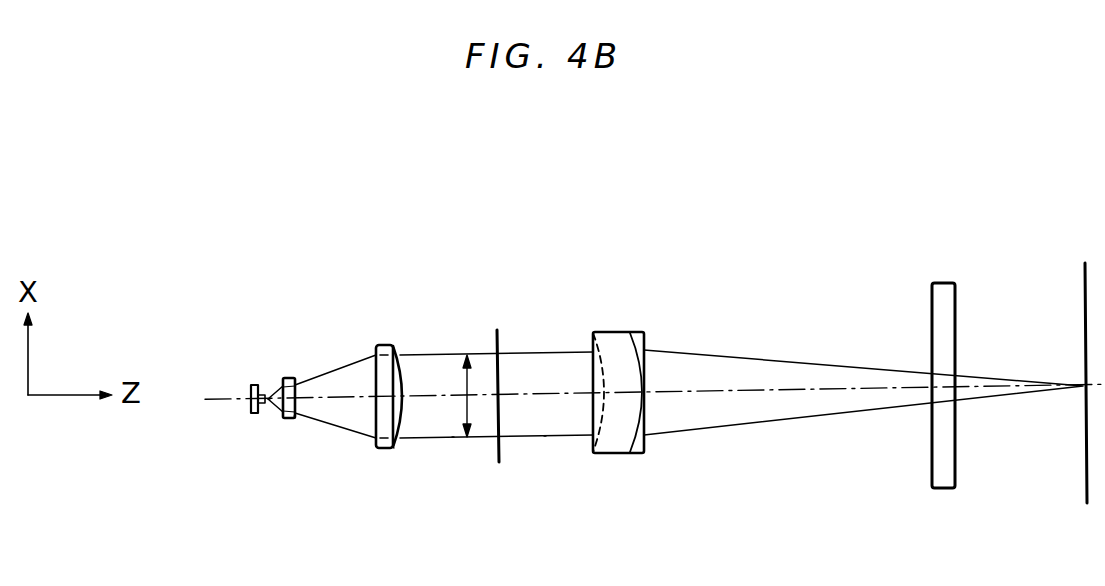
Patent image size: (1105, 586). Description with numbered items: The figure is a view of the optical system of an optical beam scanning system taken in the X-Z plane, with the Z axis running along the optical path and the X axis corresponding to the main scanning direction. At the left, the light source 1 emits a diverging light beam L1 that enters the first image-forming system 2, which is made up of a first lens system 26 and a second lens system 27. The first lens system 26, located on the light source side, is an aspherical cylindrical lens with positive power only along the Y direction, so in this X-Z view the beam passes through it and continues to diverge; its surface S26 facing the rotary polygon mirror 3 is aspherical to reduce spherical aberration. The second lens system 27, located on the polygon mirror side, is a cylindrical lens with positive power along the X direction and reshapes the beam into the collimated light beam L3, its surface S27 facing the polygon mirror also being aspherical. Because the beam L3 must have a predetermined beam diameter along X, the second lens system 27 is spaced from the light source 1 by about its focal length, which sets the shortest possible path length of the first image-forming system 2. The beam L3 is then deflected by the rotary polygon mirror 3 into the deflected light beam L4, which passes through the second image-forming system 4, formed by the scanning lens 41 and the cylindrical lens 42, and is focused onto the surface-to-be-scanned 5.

The light source 1 is at (267, 396).
The first image-forming system 2 is at (390, 263).
The first lens system 26 is at (288, 377).
The second lens system 27 is at (380, 344).
The rotary polygon mirror 3 is at (497, 330).
The second image-forming system 4 is at (948, 223).
The scanning lens 41 is at (620, 332).
The cylindrical lens 42 is at (943, 283).
The surface-to-be-scanned 5 is at (1085, 273).
The diverging light beam L1 is at (274, 404).
The surface of first lens system S26 is at (299, 419).
The surface of second lens system S27 is at (394, 449).
The reshaped light beam L3 is at (453, 438).
The deflected light beam L4 is at (545, 437).